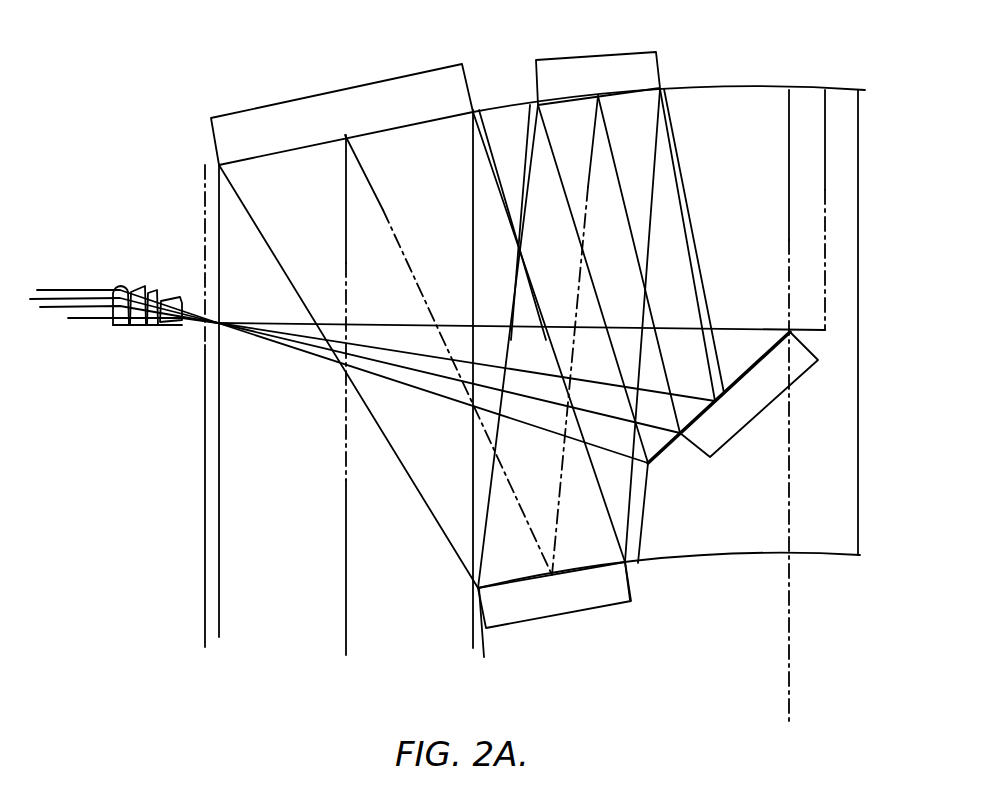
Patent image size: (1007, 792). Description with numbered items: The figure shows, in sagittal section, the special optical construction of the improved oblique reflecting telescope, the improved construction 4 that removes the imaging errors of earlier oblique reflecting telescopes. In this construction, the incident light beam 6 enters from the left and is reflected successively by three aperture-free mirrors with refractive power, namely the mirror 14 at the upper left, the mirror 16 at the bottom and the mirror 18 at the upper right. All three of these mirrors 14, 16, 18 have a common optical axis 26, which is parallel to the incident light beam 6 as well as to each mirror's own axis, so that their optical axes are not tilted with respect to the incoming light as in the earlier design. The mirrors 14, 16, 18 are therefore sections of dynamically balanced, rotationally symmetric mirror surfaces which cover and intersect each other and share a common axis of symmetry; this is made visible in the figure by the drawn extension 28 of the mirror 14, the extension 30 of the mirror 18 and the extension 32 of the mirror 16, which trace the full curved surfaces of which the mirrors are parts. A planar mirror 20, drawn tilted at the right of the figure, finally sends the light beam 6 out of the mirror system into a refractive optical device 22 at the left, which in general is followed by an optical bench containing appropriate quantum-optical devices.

The improved construction 4 is at (112, 509).
The incident light beam 6 is at (346, 594).
The mirror with refractive power 14 is at (288, 108).
The mirror with refractive power 16 is at (565, 618).
The mirror with refractive power 18 is at (593, 55).
The planar mirror 20 is at (718, 437).
The refractive optical device 22 is at (180, 270).
The common optical axis 26 is at (789, 656).
The extension of mirror surface 28 is at (499, 108).
The extension of mirror surface 30 is at (750, 90).
The extension of mirror surface 32 is at (673, 562).